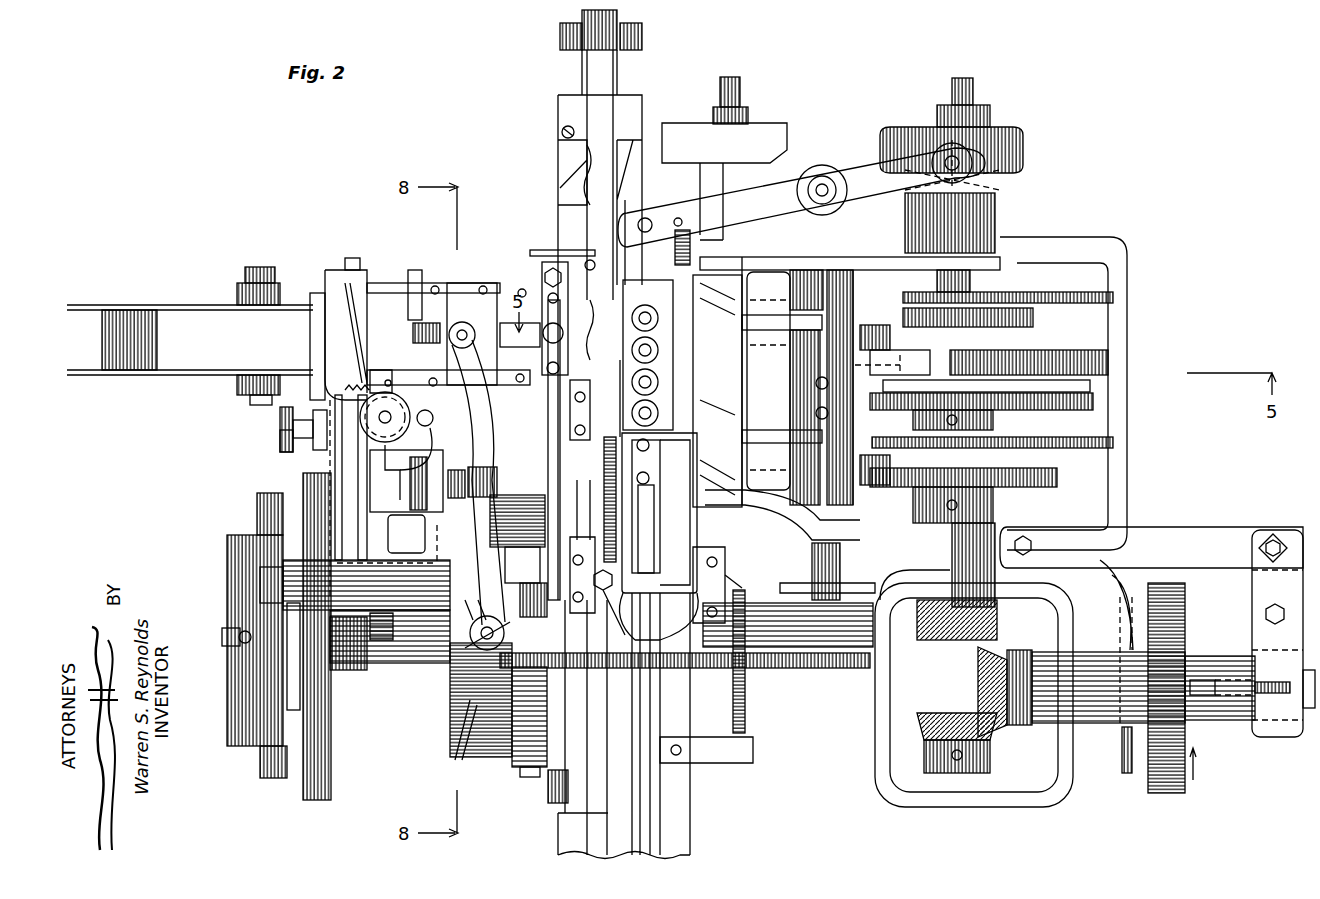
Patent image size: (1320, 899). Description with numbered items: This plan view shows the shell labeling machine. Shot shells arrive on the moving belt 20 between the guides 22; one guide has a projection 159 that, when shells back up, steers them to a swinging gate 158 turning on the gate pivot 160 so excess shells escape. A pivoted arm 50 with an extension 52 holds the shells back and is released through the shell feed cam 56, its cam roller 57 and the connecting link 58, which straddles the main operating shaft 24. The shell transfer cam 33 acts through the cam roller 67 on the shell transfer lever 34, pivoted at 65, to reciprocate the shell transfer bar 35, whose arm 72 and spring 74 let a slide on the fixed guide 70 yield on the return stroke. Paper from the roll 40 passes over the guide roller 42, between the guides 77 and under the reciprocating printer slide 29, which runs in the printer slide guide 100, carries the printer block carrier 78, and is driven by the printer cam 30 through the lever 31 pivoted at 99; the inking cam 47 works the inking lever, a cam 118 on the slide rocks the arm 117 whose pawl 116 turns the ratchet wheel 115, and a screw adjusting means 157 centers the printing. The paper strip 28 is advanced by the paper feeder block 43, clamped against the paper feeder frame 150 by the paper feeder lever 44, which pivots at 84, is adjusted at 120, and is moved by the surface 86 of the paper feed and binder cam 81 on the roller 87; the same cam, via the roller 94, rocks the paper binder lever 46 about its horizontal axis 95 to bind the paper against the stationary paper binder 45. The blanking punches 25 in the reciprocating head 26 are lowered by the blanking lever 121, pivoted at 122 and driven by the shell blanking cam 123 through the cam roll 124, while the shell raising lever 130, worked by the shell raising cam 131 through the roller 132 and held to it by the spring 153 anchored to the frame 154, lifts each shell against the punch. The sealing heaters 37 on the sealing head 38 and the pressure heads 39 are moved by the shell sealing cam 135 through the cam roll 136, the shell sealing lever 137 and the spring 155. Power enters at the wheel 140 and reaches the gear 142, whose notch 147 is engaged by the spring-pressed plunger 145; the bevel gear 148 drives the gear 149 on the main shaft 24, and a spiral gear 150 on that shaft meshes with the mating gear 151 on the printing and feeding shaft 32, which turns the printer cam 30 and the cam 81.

The moving belt 20 is at (600, 77).
The guides 22 is at (630, 200).
The main operating shaft 24 is at (972, 282).
The blanking punches 25 is at (635, 350).
The reciprocating head 26 is at (742, 290).
The strip of paper 28 is at (165, 318).
The reciprocating printer slide 29 is at (345, 300).
The printer cam 30 is at (255, 745).
The printing lever 31 is at (292, 665).
The printing and feeding shaft 32 is at (220, 633).
The shell transfer cam 33 is at (1010, 130).
The shell transfer lever 34 is at (760, 197).
The shell transfer bar 35 is at (700, 258).
The sealing heater means 37 is at (635, 410).
The reciprocating sealing head means 38 is at (713, 417).
The pressure head 39 is at (660, 480).
The roll 40 is at (82, 303).
The guide roller 42 is at (215, 373).
The paper feeder block 43 is at (466, 320).
The paper feeder lever 44 is at (455, 620).
The paper binder 45 is at (540, 282).
The paper binder lever 46 is at (552, 560).
The inking cam 47 is at (320, 800).
The pivoted arm 50 is at (558, 252).
The extension 52 is at (590, 258).
The shell feed cam 56 is at (1003, 405).
The cam roller 57 is at (1095, 403).
The connecting link 58 is at (1090, 388).
The pivot 65 is at (822, 183).
The cam roller 67 is at (1000, 184).
The fixed guide 70 is at (620, 417).
The arm 72 is at (645, 580).
The spring 74 is at (605, 500).
The guides 77 is at (495, 305).
The printer block carrier 78 is at (390, 300).
The paper feed and binder cam 81 is at (455, 700).
The pivot 84 is at (445, 495).
The cam surface 86 is at (480, 592).
The roller 87 is at (476, 645).
The roller 94 is at (490, 655).
The horizontal axis 95 is at (503, 400).
The pivot 99 is at (260, 587).
The printer slide guide 100 is at (330, 330).
The ratchet wheel 115 is at (340, 410).
The pawl 116 is at (422, 432).
The arm 117 is at (370, 375).
The cam 118 is at (380, 300).
The adjusting means 120 is at (460, 758).
The blanking lever 121 is at (772, 320).
The pivot 122 is at (815, 555).
The shell blanking cam 123 is at (1080, 362).
The cam roll 124 is at (895, 362).
The shell raising lever 130 is at (866, 265).
The shell raising cam 131 is at (1035, 319).
The roller 132 is at (895, 350).
The shell sealing cam 135 is at (1060, 482).
The cam roll 136 is at (926, 489).
The shell sealing lever 137 is at (768, 448).
The sprocket or other wheel 140 is at (1120, 758).
The gear 142 is at (1168, 782).
The reciprocable plunger 145 is at (1212, 692).
The notch 147 is at (1195, 700).
The bevel gear 148 is at (1000, 738).
The gear 149 is at (940, 725).
The spiral gear 150 is at (450, 330).
The mating spiral gear 151 is at (935, 590).
The spring 153 is at (1090, 292).
The frame 154 is at (1085, 243).
The spring 155 is at (1085, 447).
The screw adjusting means 157 is at (285, 437).
The swinging gate 158 is at (567, 163).
The projection 159 is at (607, 172).
The gate pivot 160 is at (565, 130).